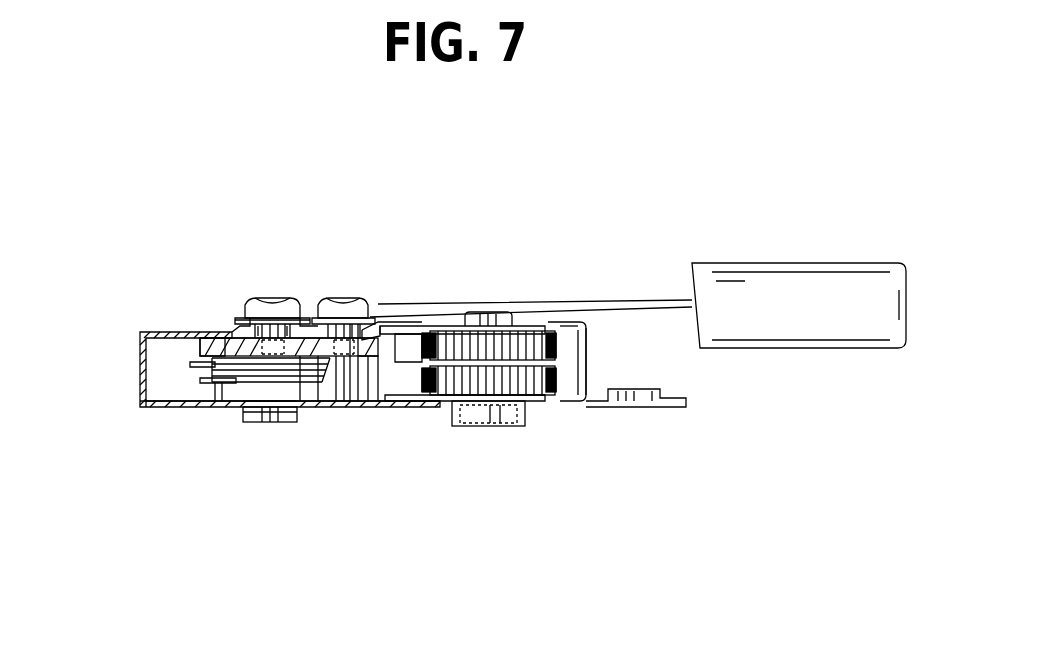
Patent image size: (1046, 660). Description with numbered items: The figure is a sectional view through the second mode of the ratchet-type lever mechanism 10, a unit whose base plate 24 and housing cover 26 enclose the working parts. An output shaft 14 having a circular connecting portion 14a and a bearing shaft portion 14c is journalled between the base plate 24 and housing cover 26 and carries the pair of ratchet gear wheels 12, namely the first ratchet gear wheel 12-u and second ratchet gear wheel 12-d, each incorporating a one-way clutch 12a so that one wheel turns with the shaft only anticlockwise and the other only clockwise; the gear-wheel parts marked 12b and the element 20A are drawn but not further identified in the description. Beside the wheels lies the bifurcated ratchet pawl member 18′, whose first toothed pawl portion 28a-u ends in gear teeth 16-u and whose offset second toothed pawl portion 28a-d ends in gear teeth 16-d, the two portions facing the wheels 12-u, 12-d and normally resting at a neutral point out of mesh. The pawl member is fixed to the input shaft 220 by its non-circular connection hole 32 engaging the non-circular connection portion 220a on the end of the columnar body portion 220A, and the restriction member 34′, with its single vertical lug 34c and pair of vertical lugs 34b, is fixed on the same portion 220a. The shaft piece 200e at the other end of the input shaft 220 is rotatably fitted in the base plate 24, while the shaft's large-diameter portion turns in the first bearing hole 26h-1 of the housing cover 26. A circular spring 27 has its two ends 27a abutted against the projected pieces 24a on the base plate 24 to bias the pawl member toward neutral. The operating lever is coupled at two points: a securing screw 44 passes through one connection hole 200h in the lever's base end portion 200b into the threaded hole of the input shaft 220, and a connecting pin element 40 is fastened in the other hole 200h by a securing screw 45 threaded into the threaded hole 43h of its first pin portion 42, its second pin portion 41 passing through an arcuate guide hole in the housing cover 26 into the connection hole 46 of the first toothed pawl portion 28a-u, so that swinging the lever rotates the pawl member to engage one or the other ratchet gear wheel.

The ratchet-type lever mechanism 10 is at (646, 184).
The wiper blade 12 is at (799, 305).
The one-way clutch 12a is at (615, 303).
The bearing portion 12b is at (566, 336).
The first ratchet gear wheel 12-u is at (562, 351).
The second ratchet gear wheel 12-d is at (562, 375).
The output shaft 14 is at (525, 322).
The circular connecting portion 14a is at (500, 427).
The bearing shaft portion 14c is at (509, 325).
The gear teeth 16-u is at (446, 320).
The gear teeth 16-d is at (437, 404).
The bifurcated ratchet pawl member 18′ is at (196, 345).
The side wall 20A is at (556, 322).
The base plate 24 is at (151, 402).
The projected pieces 24a is at (141, 403).
The housing cover 26 is at (141, 336).
The first bearing hole 26h-1 is at (291, 318).
The circular spring 27 is at (222, 403).
The ends of circular spring 27a is at (190, 364).
The first toothed pawl portion 28a-u is at (450, 322).
The second toothed pawl portion 28a-d is at (414, 403).
The non-circular connection hole 32 is at (215, 336).
The restriction member 34′ is at (205, 338).
The pair of vertical lugs 34b is at (201, 403).
The vertical lug 34c is at (326, 403).
The connecting pin element 40 is at (380, 403).
The second pin portion 41 is at (344, 403).
The first pin portion 42 is at (343, 300).
The threaded hole 43h is at (252, 305).
The securing screw 44 is at (265, 300).
The securing screw 45 is at (396, 304).
The connection hole 46 is at (363, 403).
The base end portion 200b is at (236, 330).
The shaft piece 200e is at (275, 423).
The connection holes 200h is at (276, 318).
The input shaft 220 is at (286, 425).
The non-circular connection portion 220a is at (320, 318).
The columnar body portion 220A is at (237, 403).